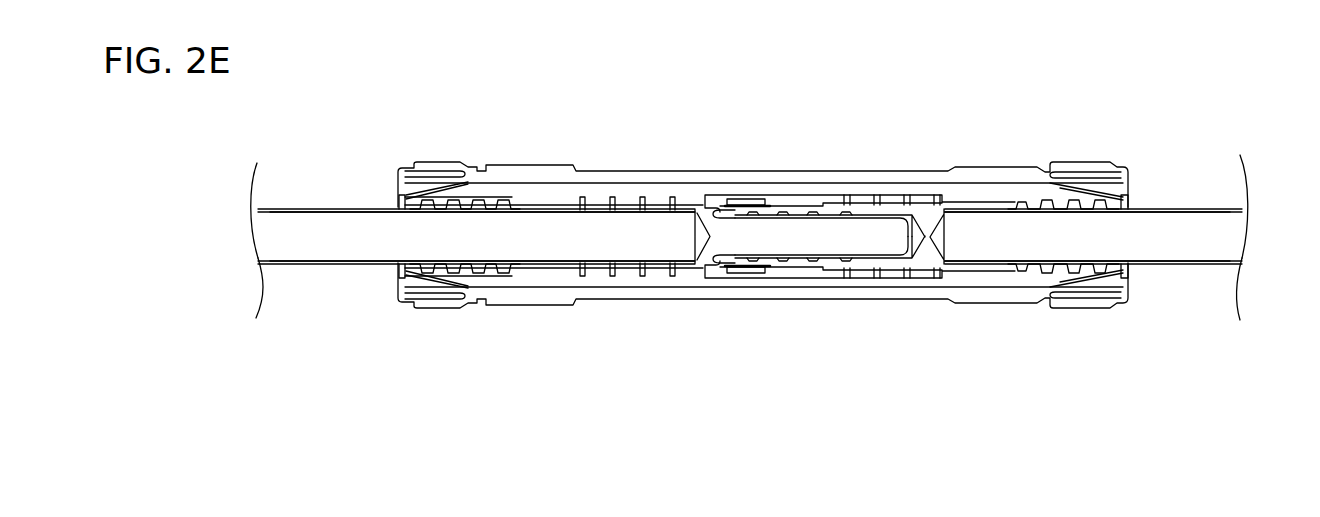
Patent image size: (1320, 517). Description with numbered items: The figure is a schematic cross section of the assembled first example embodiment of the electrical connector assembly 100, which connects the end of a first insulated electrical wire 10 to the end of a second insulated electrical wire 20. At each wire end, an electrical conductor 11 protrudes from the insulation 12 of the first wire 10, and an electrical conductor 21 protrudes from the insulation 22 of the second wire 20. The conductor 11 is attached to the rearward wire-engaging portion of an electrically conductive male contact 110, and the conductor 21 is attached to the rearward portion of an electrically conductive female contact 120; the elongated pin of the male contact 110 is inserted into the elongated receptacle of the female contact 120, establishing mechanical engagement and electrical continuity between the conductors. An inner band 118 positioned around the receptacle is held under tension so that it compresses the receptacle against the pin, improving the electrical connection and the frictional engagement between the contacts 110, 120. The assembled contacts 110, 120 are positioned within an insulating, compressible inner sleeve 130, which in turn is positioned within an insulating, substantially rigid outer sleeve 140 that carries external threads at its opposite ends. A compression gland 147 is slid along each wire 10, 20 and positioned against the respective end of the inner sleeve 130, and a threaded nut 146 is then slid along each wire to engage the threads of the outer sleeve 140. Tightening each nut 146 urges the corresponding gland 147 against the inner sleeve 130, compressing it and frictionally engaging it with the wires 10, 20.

The first insulated electrical wire 10 is at (317, 180).
The electrical conductor 11 is at (546, 236).
The insulation 12 is at (274, 266).
The second insulated electrical wire 20 is at (1192, 180).
The electrical conductor 21 is at (1020, 235).
The insulation 22 is at (1193, 265).
The electrical connector assembly 100 is at (635, 508).
The male contact 110 is at (756, 235).
The inner band 118 is at (748, 200).
The female contact 120 is at (927, 215).
The inner sleeve 130 is at (540, 195).
The outer sleeve 140 is at (975, 172).
The threaded nut 146 is at (432, 167).
The compression gland 147 is at (417, 187).